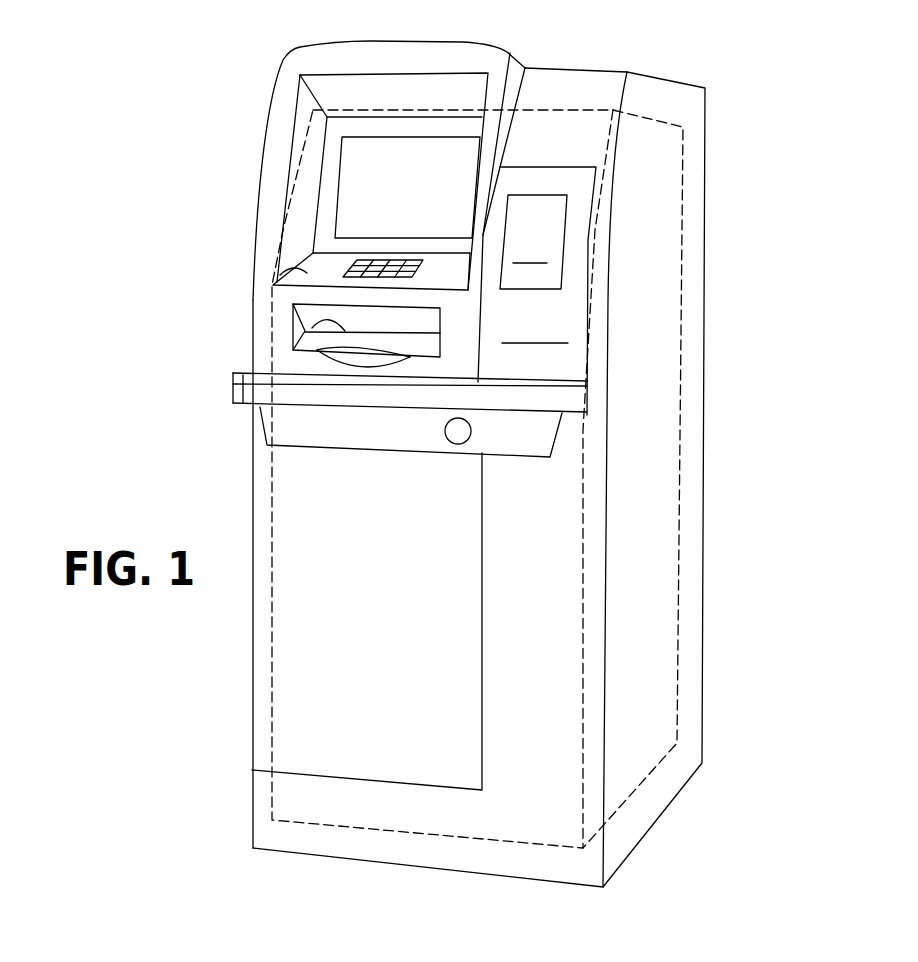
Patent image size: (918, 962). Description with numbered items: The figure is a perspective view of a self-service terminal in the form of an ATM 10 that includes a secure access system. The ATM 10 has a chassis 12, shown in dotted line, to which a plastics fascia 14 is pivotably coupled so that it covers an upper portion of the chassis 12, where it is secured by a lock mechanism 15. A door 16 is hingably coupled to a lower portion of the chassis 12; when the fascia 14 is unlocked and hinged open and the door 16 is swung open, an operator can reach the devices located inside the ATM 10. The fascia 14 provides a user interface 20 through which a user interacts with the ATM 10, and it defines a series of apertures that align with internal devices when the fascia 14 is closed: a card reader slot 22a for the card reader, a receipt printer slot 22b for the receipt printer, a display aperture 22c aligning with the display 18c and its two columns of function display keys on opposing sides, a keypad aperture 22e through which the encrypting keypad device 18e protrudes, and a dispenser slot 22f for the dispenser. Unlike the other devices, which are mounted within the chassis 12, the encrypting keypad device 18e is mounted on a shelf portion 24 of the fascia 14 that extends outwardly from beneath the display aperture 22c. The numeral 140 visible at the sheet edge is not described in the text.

The ATM 10 is at (737, 617).
The chassis 12 is at (685, 145).
The fascia 14 is at (490, 50).
The lock mechanism 15 is at (453, 435).
The door 16 is at (258, 680).
The display 18c is at (438, 155).
The encrypting keypad device 18e is at (378, 260).
The user interface 20 is at (232, 251).
The card reader slot 22a is at (532, 264).
The receipt printer slot 22b is at (547, 343).
The display aperture 22c is at (375, 130).
The keypad aperture 22e is at (350, 263).
The dispenser slot 22f is at (307, 326).
The shelf portion 24 is at (313, 249).
The machine (adjacent figure) 140 is at (152, 961).